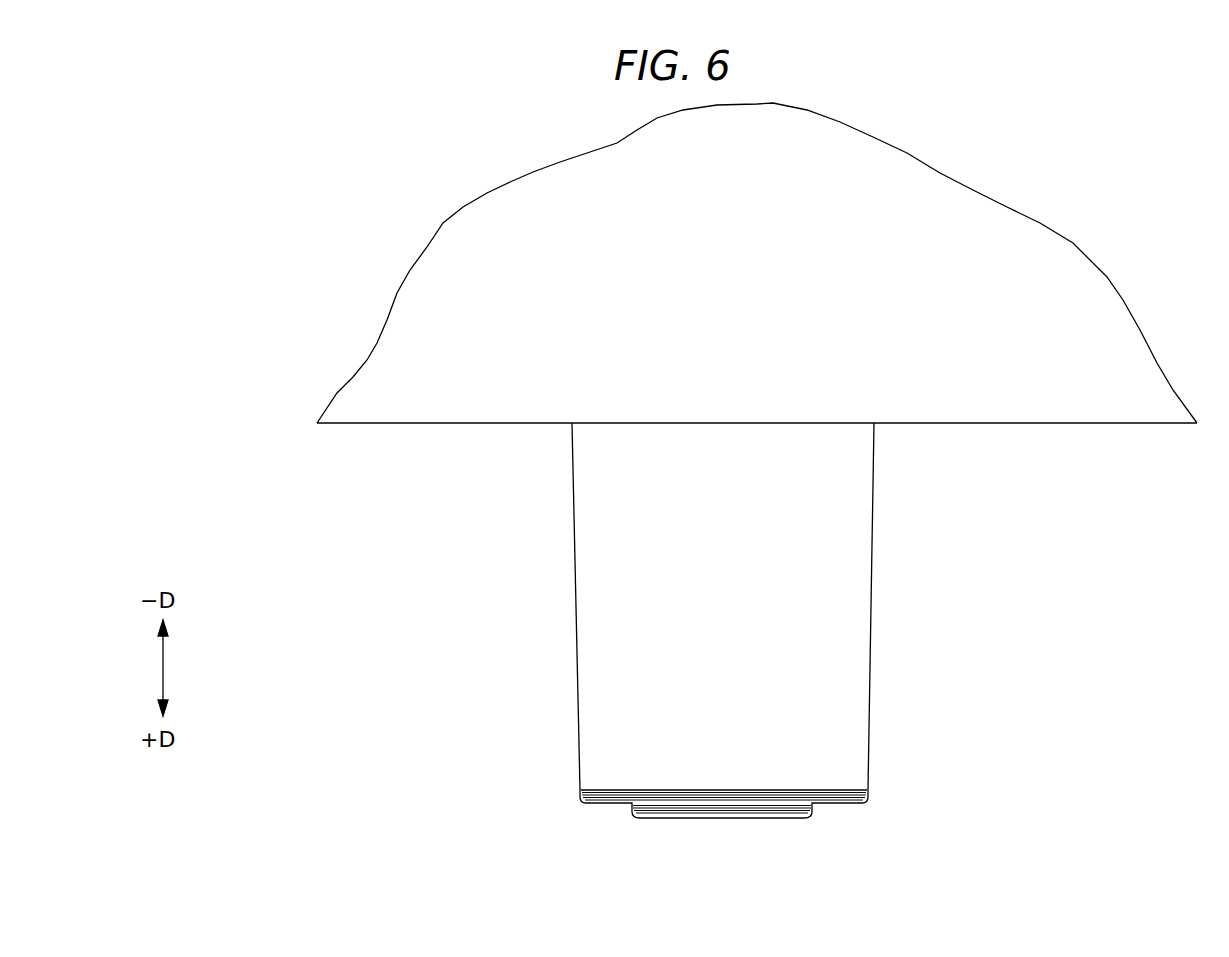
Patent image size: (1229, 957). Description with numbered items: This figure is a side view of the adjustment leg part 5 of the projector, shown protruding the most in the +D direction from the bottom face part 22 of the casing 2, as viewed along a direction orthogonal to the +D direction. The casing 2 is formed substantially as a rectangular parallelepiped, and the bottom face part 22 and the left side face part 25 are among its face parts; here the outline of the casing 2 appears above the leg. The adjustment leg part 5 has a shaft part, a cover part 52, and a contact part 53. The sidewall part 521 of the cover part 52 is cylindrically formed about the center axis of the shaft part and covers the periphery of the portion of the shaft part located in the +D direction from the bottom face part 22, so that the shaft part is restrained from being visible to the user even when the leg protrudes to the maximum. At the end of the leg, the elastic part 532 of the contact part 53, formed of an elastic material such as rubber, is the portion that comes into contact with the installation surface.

The casing 2 is at (762, 305).
The left side face part 25 is at (1037, 237).
The bottom face part 22 is at (1118, 424).
The adjustment leg part 5 is at (836, 650).
The cover part 52 is at (804, 606).
The sidewall part 521 is at (873, 547).
The contact part 53 is at (769, 834).
The elastic part 532 is at (808, 815).